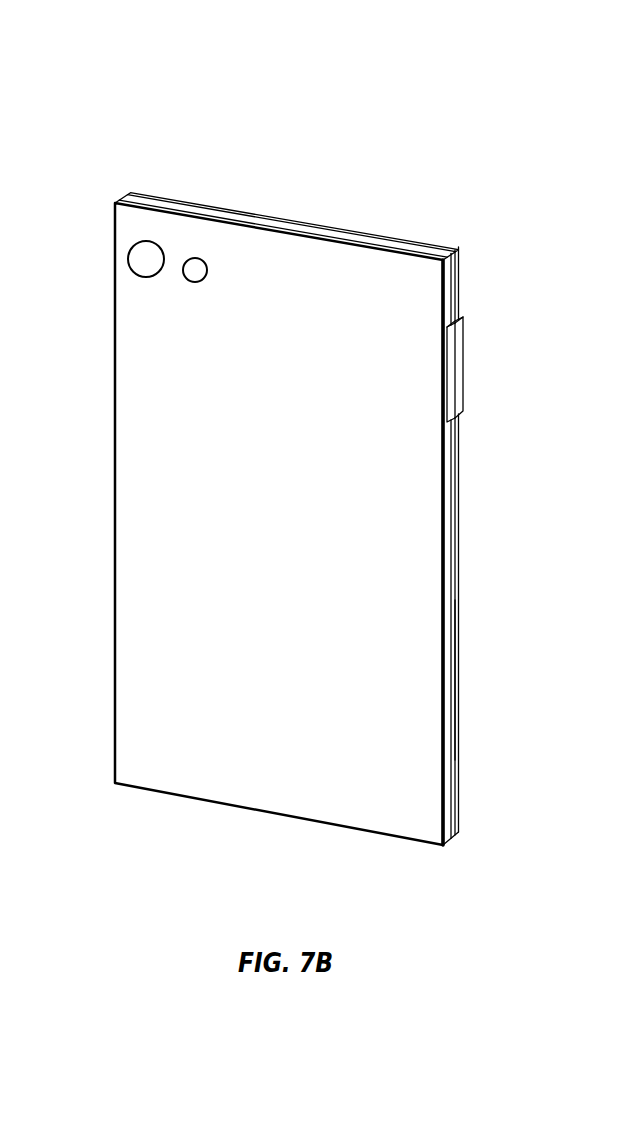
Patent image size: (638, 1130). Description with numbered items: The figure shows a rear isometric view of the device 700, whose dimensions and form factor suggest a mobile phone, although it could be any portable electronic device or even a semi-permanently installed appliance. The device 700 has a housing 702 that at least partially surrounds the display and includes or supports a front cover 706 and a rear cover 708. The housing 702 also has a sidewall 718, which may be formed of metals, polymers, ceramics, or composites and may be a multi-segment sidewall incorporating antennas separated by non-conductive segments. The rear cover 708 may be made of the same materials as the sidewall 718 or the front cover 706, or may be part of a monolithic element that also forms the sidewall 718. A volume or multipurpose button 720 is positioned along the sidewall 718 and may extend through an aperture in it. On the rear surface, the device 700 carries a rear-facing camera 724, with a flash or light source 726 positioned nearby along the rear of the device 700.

The device 700 is at (102, 72).
The housing 702 is at (455, 541).
The front cover 706 is at (459, 580).
The rear cover 708 is at (445, 607).
The sidewall 718 is at (456, 674).
The multipurpose button 720 is at (465, 367).
The rear-facing camera 724 is at (128, 260).
The light source 726 is at (195, 258).